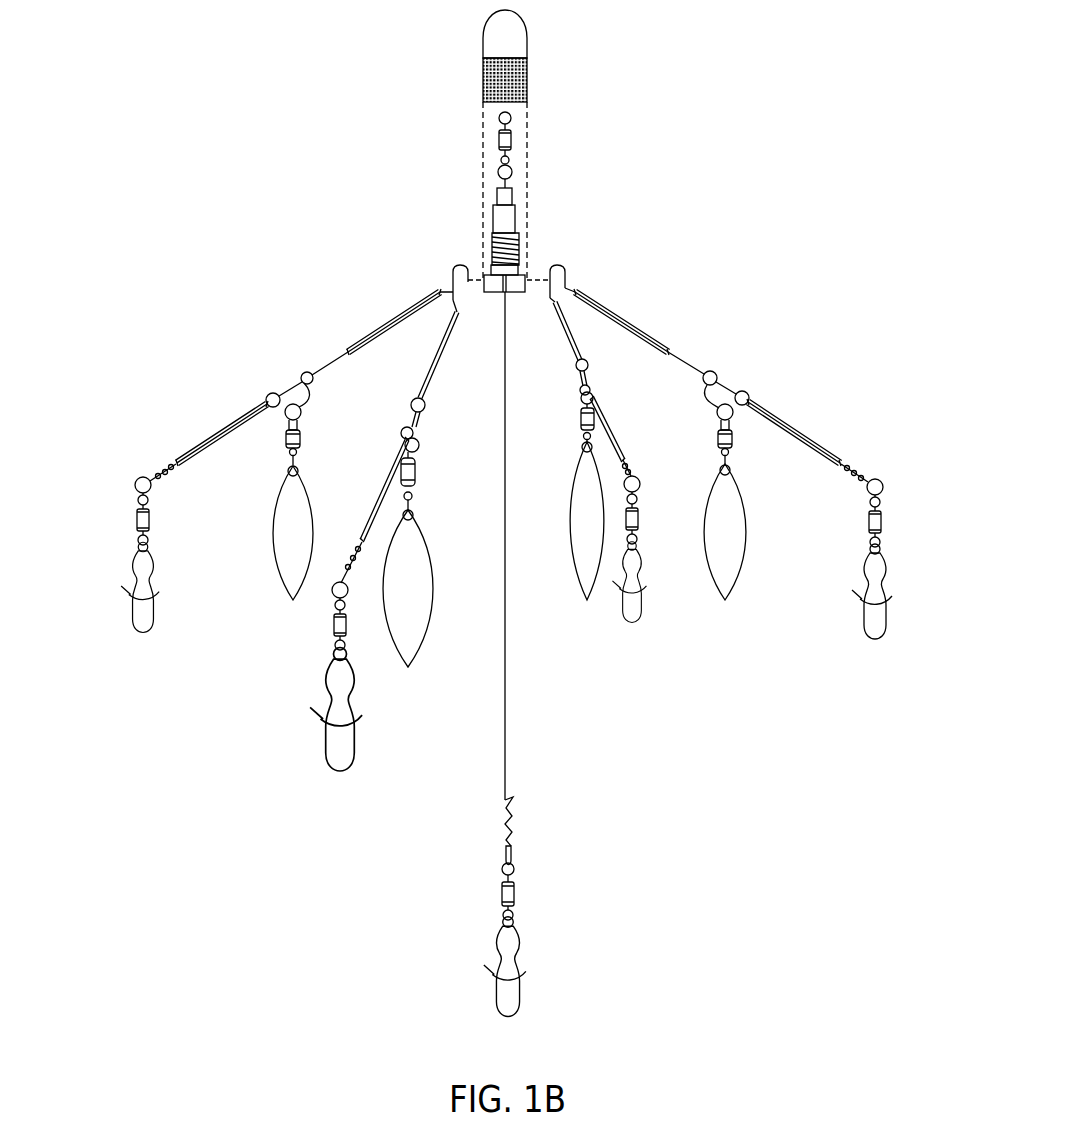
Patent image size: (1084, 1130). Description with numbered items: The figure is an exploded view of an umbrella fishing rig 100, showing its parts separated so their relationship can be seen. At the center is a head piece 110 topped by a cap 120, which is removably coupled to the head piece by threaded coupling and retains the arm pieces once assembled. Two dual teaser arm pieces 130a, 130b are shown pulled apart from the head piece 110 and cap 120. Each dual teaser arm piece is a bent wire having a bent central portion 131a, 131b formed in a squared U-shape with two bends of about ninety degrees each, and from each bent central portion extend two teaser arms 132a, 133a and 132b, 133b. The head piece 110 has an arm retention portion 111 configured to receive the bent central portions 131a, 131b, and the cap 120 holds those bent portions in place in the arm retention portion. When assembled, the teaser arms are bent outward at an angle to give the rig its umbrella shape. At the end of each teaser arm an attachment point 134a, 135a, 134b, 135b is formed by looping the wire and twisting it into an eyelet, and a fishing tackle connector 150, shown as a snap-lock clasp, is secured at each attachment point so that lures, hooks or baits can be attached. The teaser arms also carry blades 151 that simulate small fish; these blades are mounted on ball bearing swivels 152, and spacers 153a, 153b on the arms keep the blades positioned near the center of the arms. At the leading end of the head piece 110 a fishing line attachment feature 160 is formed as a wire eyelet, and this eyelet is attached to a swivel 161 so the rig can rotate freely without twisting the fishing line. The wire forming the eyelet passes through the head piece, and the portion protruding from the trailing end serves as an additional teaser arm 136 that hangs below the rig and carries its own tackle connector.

The umbrella fishing rig 100 is at (283, 150).
The head piece 110 is at (492, 208).
The arm retention portion 111 is at (476, 250).
The cap 120 is at (527, 30).
The dual teaser arm piece 130a is at (271, 333).
The dual teaser arm piece 130b is at (760, 333).
The bent central portion 131a is at (453, 256).
The bent central portion 131b is at (564, 254).
The teaser arm 132a is at (381, 488).
The teaser arm 132b is at (692, 369).
The teaser arm 133a is at (366, 346).
The teaser arm 133b is at (596, 394).
The attachment point 134a is at (349, 548).
The attachment point 134b is at (878, 479).
The attachment point 135a is at (180, 533).
The attachment point 135b is at (626, 464).
The additional teaser arm 136 is at (505, 700).
The fishing tackle connector 150 is at (146, 634).
The blade 151 is at (273, 550).
The ball bearing swivel 152 is at (286, 440).
The spacer 153a is at (223, 428).
The spacer 153b is at (388, 322).
The fishing line attachment feature 160 is at (513, 173).
The swivel 161 is at (513, 138).